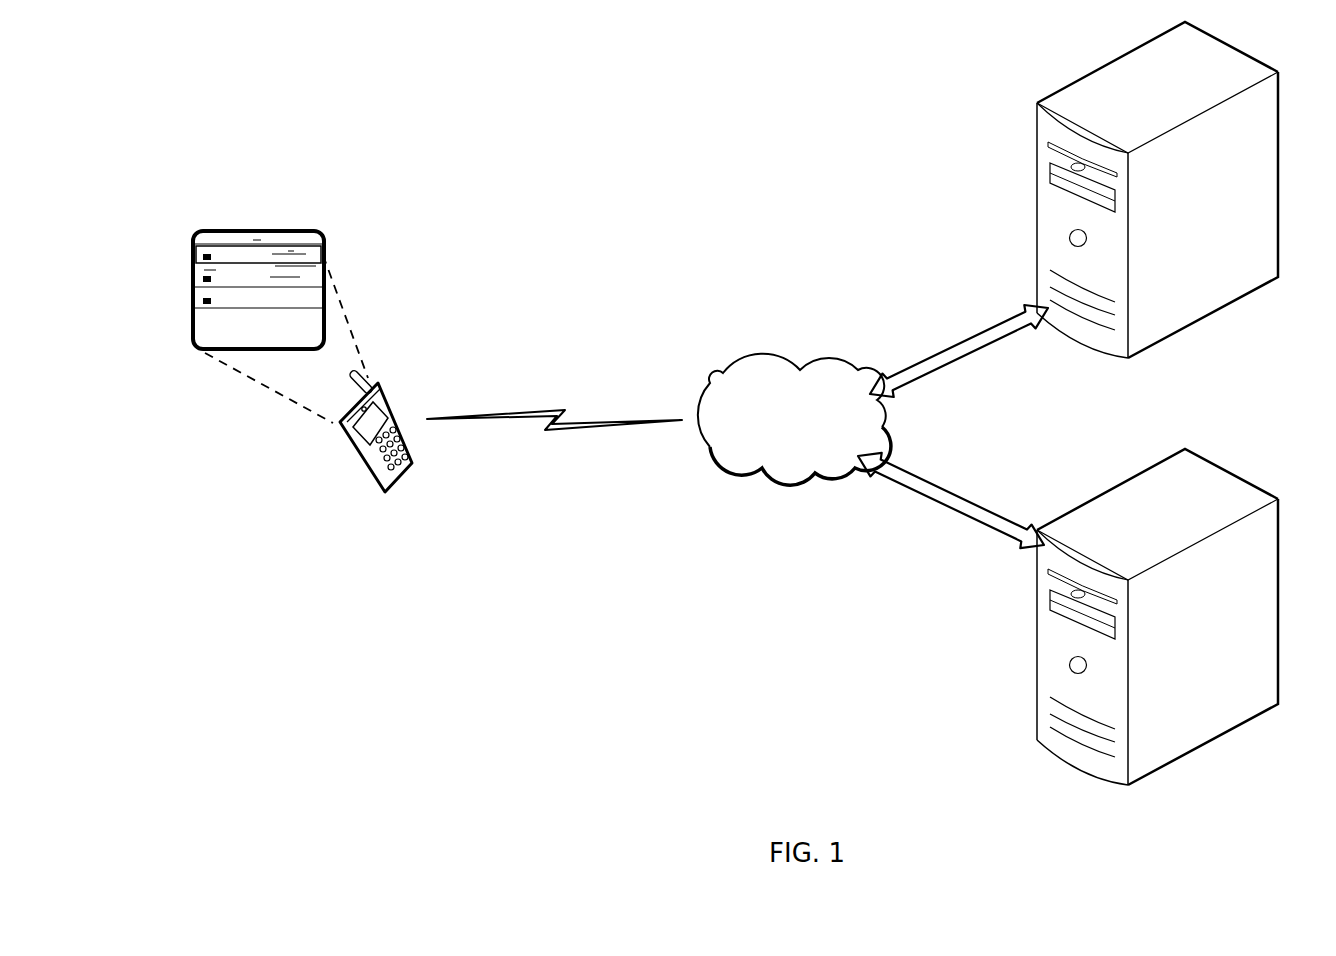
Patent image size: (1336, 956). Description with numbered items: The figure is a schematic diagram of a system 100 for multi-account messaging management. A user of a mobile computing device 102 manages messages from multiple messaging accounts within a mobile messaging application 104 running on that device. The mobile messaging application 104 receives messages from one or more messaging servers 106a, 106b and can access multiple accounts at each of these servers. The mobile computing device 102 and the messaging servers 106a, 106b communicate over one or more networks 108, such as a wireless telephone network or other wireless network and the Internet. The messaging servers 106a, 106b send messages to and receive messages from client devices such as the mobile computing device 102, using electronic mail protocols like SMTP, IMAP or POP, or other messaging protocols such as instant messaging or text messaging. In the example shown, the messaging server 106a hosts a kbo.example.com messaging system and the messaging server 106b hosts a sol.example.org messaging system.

The system 100 is at (530, 120).
The mobile computing device 102 is at (379, 495).
The mobile messaging application 104 is at (240, 230).
The messaging server 106a is at (1157, 190).
The messaging server 106b is at (1157, 617).
The network 108 is at (794, 419).